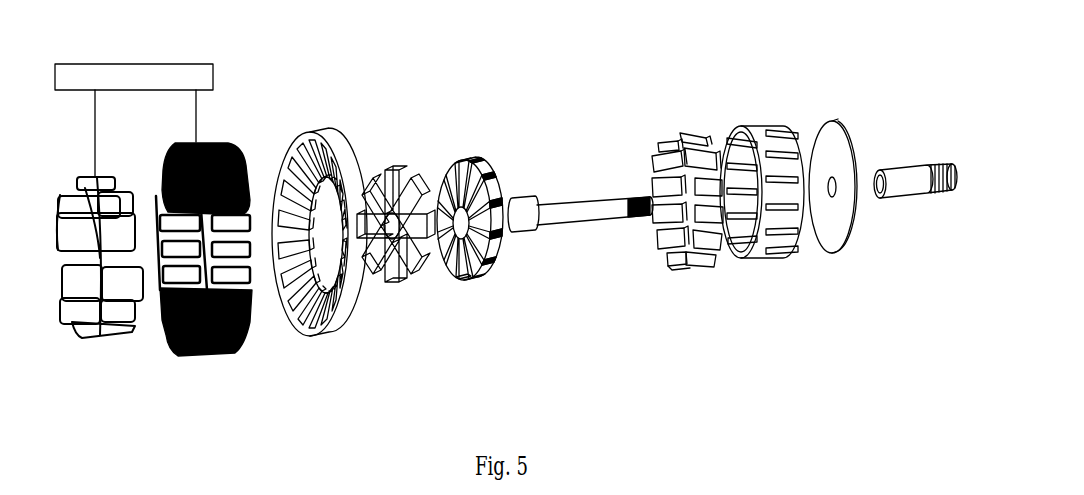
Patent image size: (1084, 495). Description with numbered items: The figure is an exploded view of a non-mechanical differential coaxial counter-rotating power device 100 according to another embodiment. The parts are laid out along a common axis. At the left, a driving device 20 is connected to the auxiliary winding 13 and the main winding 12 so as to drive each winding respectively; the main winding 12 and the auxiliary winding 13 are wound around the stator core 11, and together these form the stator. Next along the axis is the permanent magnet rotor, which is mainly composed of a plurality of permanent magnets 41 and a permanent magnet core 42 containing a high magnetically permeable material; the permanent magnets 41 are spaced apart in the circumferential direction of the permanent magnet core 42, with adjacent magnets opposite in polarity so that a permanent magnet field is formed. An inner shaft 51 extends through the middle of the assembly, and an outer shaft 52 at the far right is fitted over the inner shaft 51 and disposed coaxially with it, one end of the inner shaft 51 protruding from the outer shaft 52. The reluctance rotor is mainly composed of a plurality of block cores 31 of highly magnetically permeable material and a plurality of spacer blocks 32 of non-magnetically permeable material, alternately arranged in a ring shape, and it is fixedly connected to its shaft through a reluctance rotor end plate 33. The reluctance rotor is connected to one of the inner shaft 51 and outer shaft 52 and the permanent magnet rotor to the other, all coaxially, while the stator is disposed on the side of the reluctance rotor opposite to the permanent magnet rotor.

The non-mechanical differential coaxial counter-rotating power device 100 is at (463, 25).
The driving device 20 is at (145, 65).
The auxiliary winding 13 is at (77, 336).
The main winding 12 is at (193, 357).
The stator core 11 is at (323, 334).
The permanent magnet 41 is at (400, 168).
The permanent magnet core 42 is at (475, 162).
The inner shaft 51 is at (542, 198).
The block core 31 is at (677, 138).
The spacer block 32 is at (758, 126).
The reluctance rotor end plate 33 is at (823, 123).
The outer shaft 52 is at (903, 163).